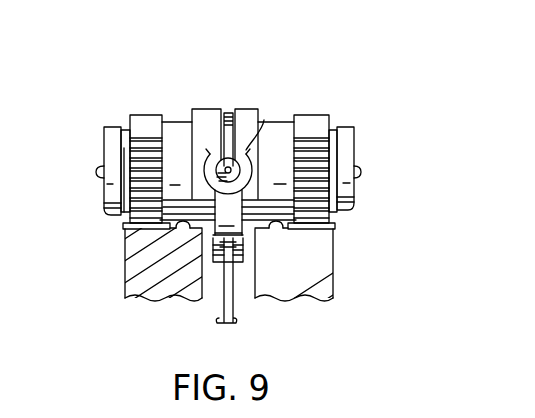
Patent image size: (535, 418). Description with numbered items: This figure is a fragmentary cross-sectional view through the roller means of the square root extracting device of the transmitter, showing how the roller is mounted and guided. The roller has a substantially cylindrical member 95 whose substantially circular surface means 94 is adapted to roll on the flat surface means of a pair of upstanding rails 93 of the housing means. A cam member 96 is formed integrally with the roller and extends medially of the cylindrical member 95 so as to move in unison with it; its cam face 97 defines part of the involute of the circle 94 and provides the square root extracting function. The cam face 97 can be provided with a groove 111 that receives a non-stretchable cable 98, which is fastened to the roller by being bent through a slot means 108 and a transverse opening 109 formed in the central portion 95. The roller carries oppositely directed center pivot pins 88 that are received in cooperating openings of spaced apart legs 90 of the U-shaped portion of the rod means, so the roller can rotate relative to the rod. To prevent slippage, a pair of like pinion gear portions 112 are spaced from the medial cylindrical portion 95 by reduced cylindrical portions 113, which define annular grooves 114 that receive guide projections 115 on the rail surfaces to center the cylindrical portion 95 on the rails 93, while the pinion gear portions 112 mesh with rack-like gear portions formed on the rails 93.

The center pivot pins 88 is at (96, 172).
The spaced apart legs 90 is at (103, 131).
The upstanding rails 93 is at (122, 282).
The circular surface means 94 is at (264, 120).
The cylindrical member 95 is at (204, 109).
The cam member 96 is at (244, 250).
The cam face 97 is at (228, 249).
The cable 98 is at (233, 312).
The slot means 108 is at (229, 104).
The transverse opening 109 is at (263, 117).
The groove 111 is at (215, 250).
The pinion gear portions 112 is at (138, 208).
The reduced cylindrical portions 113 is at (170, 111).
The annular grooves 114 is at (177, 106).
The guide projections 115 is at (125, 249).